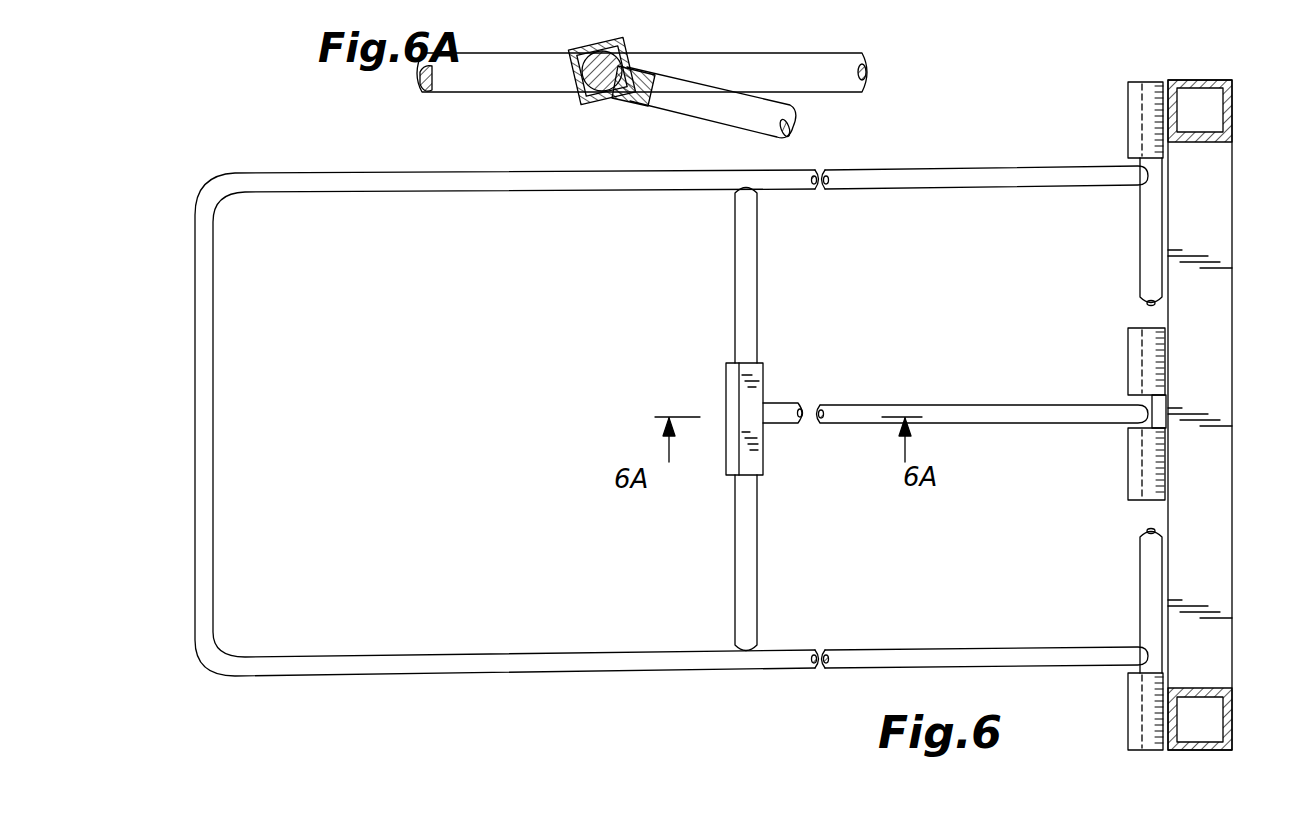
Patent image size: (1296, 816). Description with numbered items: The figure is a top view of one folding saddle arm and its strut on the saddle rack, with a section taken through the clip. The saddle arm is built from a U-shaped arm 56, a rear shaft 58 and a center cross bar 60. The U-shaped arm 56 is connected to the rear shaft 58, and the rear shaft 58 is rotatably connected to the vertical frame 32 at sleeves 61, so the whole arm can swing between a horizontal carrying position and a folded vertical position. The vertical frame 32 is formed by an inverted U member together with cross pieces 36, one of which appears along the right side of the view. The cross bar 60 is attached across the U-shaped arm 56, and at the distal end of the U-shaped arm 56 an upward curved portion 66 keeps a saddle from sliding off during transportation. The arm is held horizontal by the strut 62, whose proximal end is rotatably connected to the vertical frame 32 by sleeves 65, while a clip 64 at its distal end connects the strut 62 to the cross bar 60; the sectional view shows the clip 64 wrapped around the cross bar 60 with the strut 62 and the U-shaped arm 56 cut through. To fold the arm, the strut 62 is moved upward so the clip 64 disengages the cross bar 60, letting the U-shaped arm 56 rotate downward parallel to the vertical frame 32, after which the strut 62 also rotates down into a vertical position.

In FIG. 6, the vertical frame 32 is at (1198, 80).
In FIG. 6, the cross pieces 36 is at (1222, 312).
In FIG. 6, the U-shaped arm 56 is at (516, 180).
In FIG. 6A, the U-shaped arm 56 is at (498, 62).
In FIG. 6, the rear shaft 58 is at (1143, 238).
In FIG. 6, the center cross bar 60 is at (758, 532).
In FIG. 6A, the center cross bar 60 is at (590, 92).
In FIG. 6, the sleeves 61 is at (1128, 105).
In FIG. 6, the strut 62 is at (994, 420).
In FIG. 6A, the strut 62 is at (718, 105).
In FIG. 6, the clip 64 is at (726, 370).
In FIG. 6A, the clip 64 is at (615, 50).
In FIG. 6, the sleeves 65 is at (1128, 348).
In FIG. 6, the upward curved portion 66 is at (205, 198).